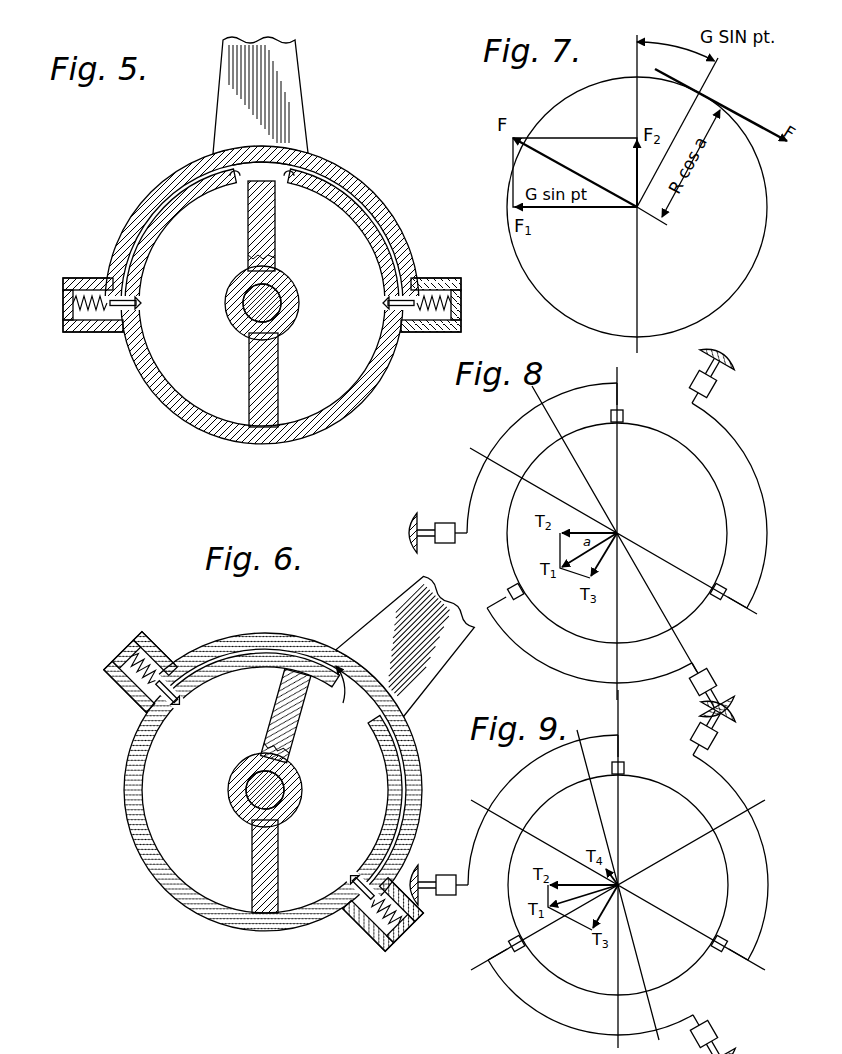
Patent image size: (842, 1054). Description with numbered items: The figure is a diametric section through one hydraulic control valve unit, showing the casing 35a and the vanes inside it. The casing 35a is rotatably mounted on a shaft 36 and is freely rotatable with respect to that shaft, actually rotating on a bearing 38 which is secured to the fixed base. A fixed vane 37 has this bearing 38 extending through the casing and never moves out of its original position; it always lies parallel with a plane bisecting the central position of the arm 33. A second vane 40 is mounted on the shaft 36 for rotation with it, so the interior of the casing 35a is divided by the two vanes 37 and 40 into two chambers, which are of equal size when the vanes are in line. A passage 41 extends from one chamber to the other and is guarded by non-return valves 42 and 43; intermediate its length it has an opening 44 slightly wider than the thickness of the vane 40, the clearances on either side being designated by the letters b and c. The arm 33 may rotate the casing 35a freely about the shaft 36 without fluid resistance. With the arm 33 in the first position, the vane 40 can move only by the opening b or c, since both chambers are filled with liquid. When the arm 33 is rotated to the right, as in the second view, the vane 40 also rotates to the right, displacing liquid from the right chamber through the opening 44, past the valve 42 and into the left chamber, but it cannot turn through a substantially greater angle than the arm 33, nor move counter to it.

In FIG. 5, the arm 33 is at (292, 77).
In FIG. 6, the arm 33 is at (395, 618).
In FIG. 5, the opening 44 is at (263, 171).
In FIG. 5, the passage 41 is at (363, 198).
In FIG. 6, the passage 41 is at (288, 648).
In FIG. 5, the opening width designation b is at (242, 180).
In FIG. 5, the opening width designation c is at (283, 183).
In FIG. 5, the second vane 40 is at (275, 236).
In FIG. 6, the second vane 40 is at (291, 713).
In FIG. 5, the shaft 36 is at (284, 296).
In FIG. 6, the shaft 36 is at (283, 782).
In FIG. 5, the bearing 38 is at (298, 325).
In FIG. 6, the bearing 38 is at (298, 795).
In FIG. 5, the fixed vane 37 is at (268, 377).
In FIG. 6, the fixed vane 37 is at (276, 867).
In FIG. 5, the non-return valve 43 is at (126, 333).
In FIG. 6, the non-return valve 43 is at (150, 699).
In FIG. 5, the non-return valve 42 is at (402, 333).
In FIG. 6, the non-return valve 42 is at (363, 898).
In FIG. 5, the casing 35a is at (208, 432).